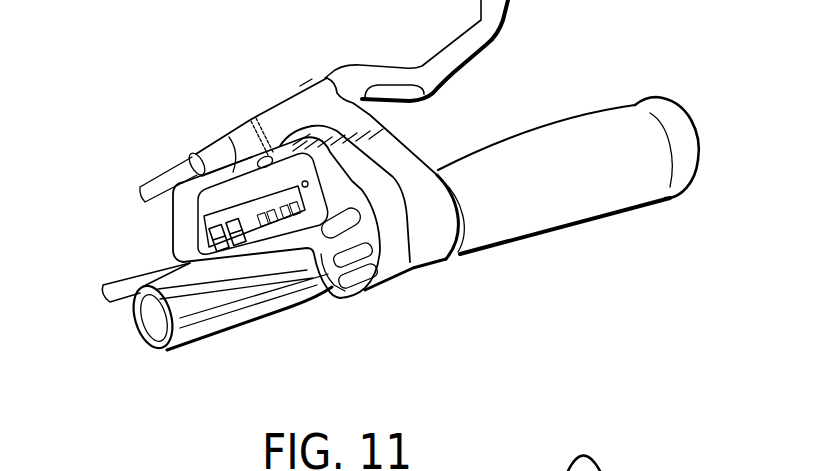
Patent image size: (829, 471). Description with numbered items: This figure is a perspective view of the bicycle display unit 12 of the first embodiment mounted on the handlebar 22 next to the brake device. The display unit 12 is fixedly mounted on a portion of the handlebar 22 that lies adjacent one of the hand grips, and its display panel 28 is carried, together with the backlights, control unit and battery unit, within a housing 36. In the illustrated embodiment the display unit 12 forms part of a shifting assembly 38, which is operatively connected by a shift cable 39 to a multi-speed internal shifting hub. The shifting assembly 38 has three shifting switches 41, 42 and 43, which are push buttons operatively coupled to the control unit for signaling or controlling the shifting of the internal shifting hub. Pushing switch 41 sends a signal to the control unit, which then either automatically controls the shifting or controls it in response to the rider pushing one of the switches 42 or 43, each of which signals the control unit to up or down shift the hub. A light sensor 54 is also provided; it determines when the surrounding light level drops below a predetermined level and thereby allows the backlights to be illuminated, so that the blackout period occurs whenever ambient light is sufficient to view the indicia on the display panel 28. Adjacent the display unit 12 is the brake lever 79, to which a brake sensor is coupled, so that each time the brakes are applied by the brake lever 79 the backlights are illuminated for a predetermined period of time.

The bicycle display unit 12 is at (140, 224).
The handlebar 22 is at (248, 318).
The display panel 28 is at (241, 201).
The housing 36 is at (343, 171).
The shifting assembly 38 is at (365, 292).
The shift cable 39 is at (118, 283).
The shifting switch 41 is at (360, 220).
The shifting switch 42 is at (426, 257).
The shifting switch 43 is at (378, 280).
The light sensor 54 is at (265, 157).
The brake lever 79 is at (494, 41).